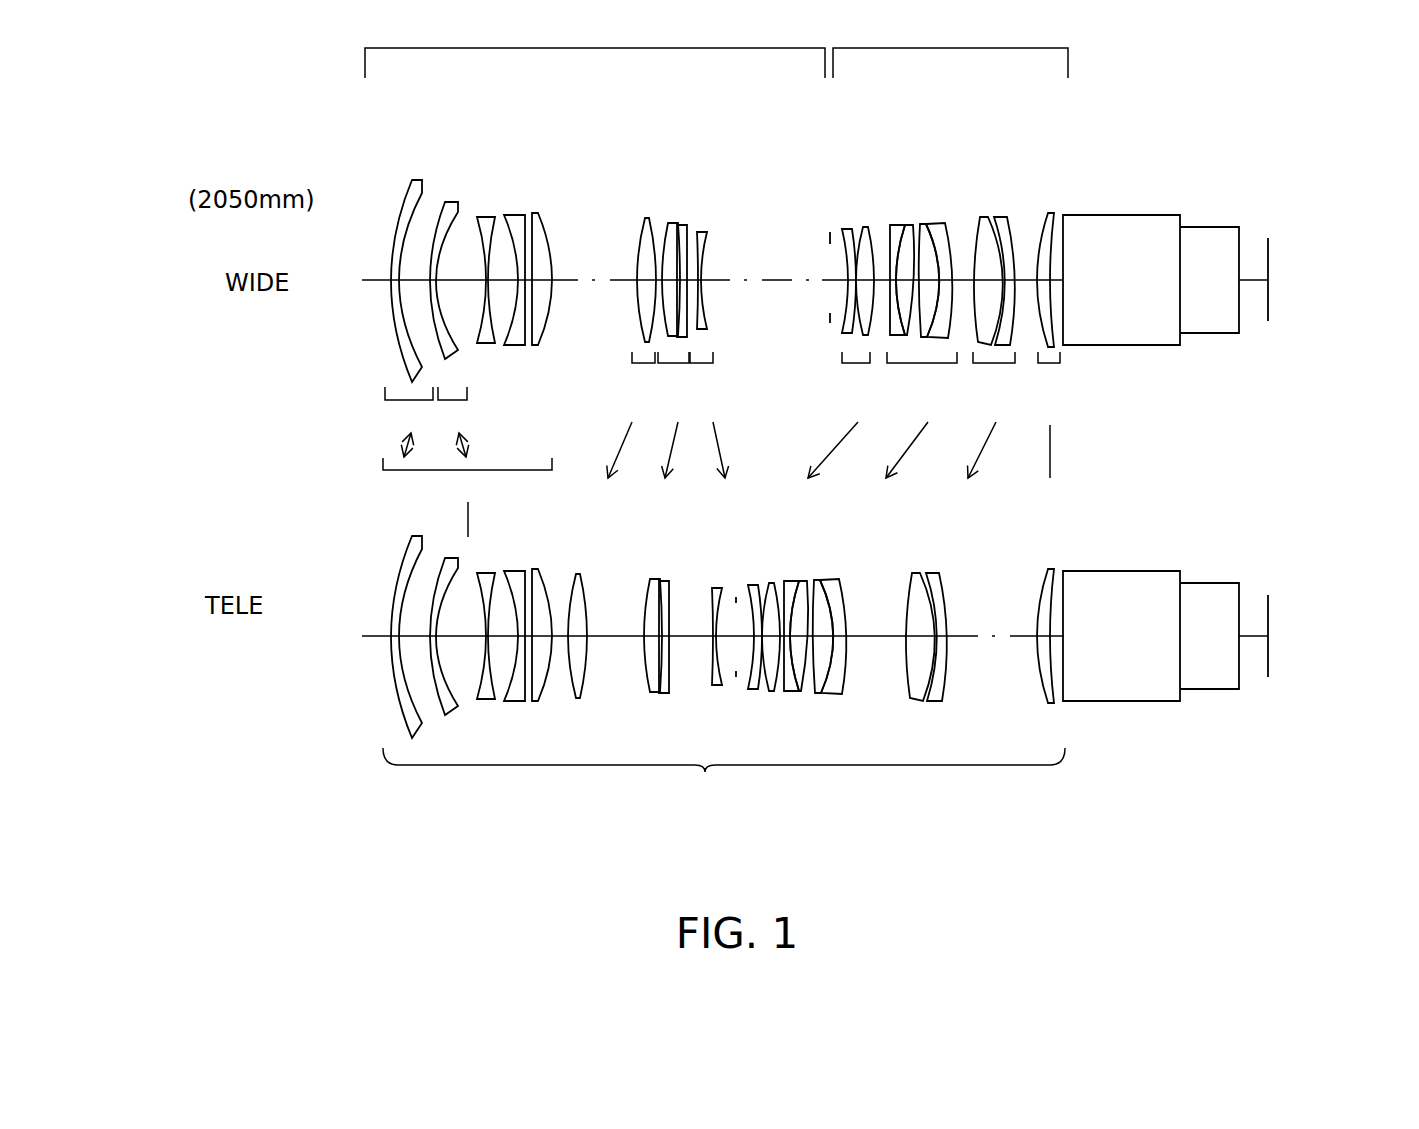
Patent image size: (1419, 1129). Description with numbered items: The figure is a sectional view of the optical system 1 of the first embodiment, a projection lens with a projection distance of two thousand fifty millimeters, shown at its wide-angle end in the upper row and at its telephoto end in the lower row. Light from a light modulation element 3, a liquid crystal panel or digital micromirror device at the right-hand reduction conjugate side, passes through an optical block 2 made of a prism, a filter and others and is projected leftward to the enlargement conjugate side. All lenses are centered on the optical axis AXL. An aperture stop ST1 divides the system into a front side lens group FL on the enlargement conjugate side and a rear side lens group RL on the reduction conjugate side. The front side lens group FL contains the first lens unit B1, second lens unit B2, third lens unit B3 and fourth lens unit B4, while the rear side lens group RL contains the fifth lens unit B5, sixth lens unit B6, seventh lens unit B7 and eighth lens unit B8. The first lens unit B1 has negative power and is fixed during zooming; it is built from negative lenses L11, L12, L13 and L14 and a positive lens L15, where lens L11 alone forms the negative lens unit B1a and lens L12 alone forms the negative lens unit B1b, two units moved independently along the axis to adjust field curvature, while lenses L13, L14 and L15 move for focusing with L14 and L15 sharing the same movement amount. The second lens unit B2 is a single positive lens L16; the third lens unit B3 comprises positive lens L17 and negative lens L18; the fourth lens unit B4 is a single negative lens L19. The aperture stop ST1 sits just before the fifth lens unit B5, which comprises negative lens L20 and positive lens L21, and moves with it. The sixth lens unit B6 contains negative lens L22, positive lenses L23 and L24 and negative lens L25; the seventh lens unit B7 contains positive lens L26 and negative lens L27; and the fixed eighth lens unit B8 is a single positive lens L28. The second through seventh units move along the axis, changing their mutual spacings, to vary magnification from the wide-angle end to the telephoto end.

The negative lens L11 is at (417, 180).
The negative lens L12 is at (458, 202).
The negative lens L13 is at (486, 217).
The negative lens L14 is at (525, 215).
The positive lens L15 is at (538, 213).
The positive lens L16 is at (647, 218).
The positive lens L17 is at (670, 223).
The negative lens L18 is at (680, 225).
The negative lens L19 is at (707, 232).
The negative lens L20 is at (845, 229).
The positive lens L21 is at (865, 227).
The negative lens L22 is at (895, 225).
The positive lens L23 is at (910, 225).
The positive lens L24 is at (930, 224).
The negative lens L25 is at (942, 223).
The positive lens L26 is at (982, 217).
The negative lens L27 is at (1003, 217).
The positive lens L28 is at (1050, 213).
The aperture stop ST1 is at (830, 232).
The first lens unit B1 is at (467, 497).
The negative lens unit B1a is at (409, 422).
The negative lens unit B1b is at (462, 422).
The second lens unit B2 is at (631, 415).
The third lens unit B3 is at (673, 415).
The fourth lens unit B4 is at (707, 415).
The fifth lens unit B5 is at (839, 415).
The sixth lens unit B6 is at (921, 415).
The seventh lens unit B7 is at (991, 415).
The eighth lens unit B8 is at (1053, 415).
The front side lens group FL is at (595, 50).
The rear side lens group RL is at (950, 50).
The optical axis AXL is at (386, 280).
The optical system 1 is at (705, 774).
The optical block 2 is at (1073, 748).
The light modulation element 3 is at (1270, 603).